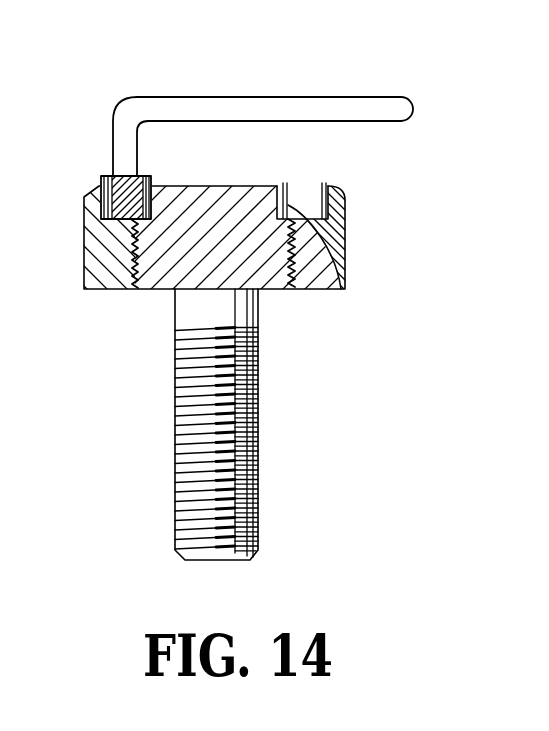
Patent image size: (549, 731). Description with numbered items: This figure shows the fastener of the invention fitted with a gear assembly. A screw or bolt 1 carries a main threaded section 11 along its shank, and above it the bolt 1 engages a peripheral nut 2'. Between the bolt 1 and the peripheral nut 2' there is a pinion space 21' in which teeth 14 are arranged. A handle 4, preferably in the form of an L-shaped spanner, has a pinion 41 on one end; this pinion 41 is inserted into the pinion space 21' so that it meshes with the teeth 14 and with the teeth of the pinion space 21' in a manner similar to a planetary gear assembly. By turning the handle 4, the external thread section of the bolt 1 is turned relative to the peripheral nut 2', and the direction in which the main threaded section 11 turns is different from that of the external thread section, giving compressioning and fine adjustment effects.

The bolt 1 is at (168, 495).
The main threaded section 11 is at (185, 383).
The teeth 14 is at (345, 290).
The peripheral nut 2' is at (255, 248).
The pinion space 21' is at (369, 191).
The handle 4 is at (130, 97).
The pinion 41 is at (100, 178).